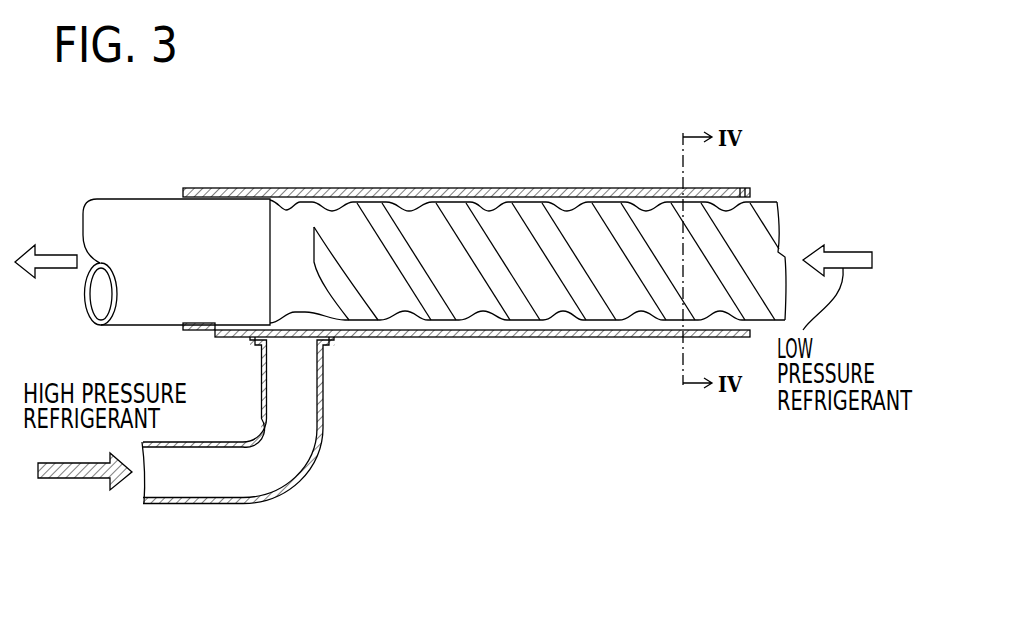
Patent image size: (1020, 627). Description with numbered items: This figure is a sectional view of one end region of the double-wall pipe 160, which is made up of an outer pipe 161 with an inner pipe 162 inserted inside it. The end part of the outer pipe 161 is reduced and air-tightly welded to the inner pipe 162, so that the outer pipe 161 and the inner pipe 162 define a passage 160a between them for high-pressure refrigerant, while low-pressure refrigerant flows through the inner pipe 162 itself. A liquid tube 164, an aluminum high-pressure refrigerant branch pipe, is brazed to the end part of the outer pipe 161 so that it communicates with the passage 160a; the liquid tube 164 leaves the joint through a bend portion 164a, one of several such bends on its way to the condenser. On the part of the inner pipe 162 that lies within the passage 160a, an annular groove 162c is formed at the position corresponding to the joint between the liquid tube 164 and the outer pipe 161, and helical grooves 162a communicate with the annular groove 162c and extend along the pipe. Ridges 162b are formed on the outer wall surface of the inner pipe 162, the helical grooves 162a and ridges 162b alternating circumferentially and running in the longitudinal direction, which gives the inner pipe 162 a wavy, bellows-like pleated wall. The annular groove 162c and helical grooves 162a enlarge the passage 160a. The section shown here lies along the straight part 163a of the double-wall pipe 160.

The double-wall pipe 160 is at (538, 188).
The passage 160a is at (603, 197).
The outer pipe 161 is at (232, 188).
The inner pipe 162 is at (237, 225).
The helical grooves 162a is at (410, 207).
The ridges 162b is at (447, 207).
The annular grooves 162c is at (293, 210).
The straight part 163a is at (733, 186).
The liquid tube 164 is at (210, 502).
The bend portion 164a is at (322, 450).